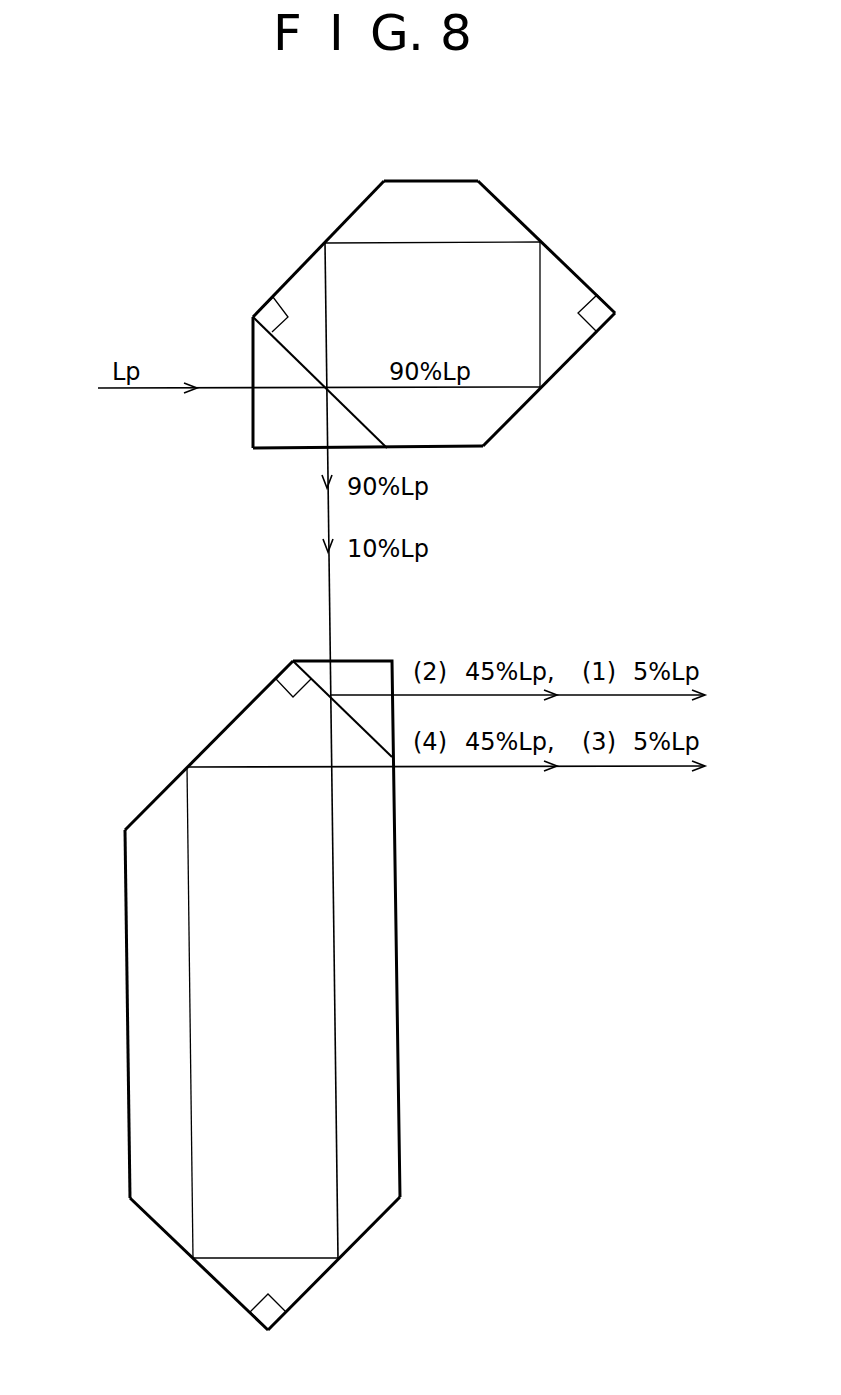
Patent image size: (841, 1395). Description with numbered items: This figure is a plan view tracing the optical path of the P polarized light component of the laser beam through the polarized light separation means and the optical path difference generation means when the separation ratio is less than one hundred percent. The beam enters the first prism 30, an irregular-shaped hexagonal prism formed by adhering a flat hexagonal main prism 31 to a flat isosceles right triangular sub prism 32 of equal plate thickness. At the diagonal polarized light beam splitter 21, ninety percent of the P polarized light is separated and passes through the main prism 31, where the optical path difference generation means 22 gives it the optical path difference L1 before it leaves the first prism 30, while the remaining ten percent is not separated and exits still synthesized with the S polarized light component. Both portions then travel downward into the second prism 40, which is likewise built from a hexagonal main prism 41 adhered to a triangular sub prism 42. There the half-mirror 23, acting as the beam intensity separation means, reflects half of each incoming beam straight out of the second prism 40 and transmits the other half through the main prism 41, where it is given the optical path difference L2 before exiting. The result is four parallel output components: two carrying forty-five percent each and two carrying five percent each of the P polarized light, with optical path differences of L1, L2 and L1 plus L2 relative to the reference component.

The polarized light separation means 21 is at (300, 367).
The optical path difference generation means 22 is at (502, 412).
The beam intensity separation means 23 is at (322, 683).
The first prism 30 is at (394, 286).
The main prism 31 is at (428, 195).
The sub prism 32 is at (267, 427).
The second prism 40 is at (227, 959).
The main prism 41 is at (138, 1000).
The sub prism 42 is at (352, 675).